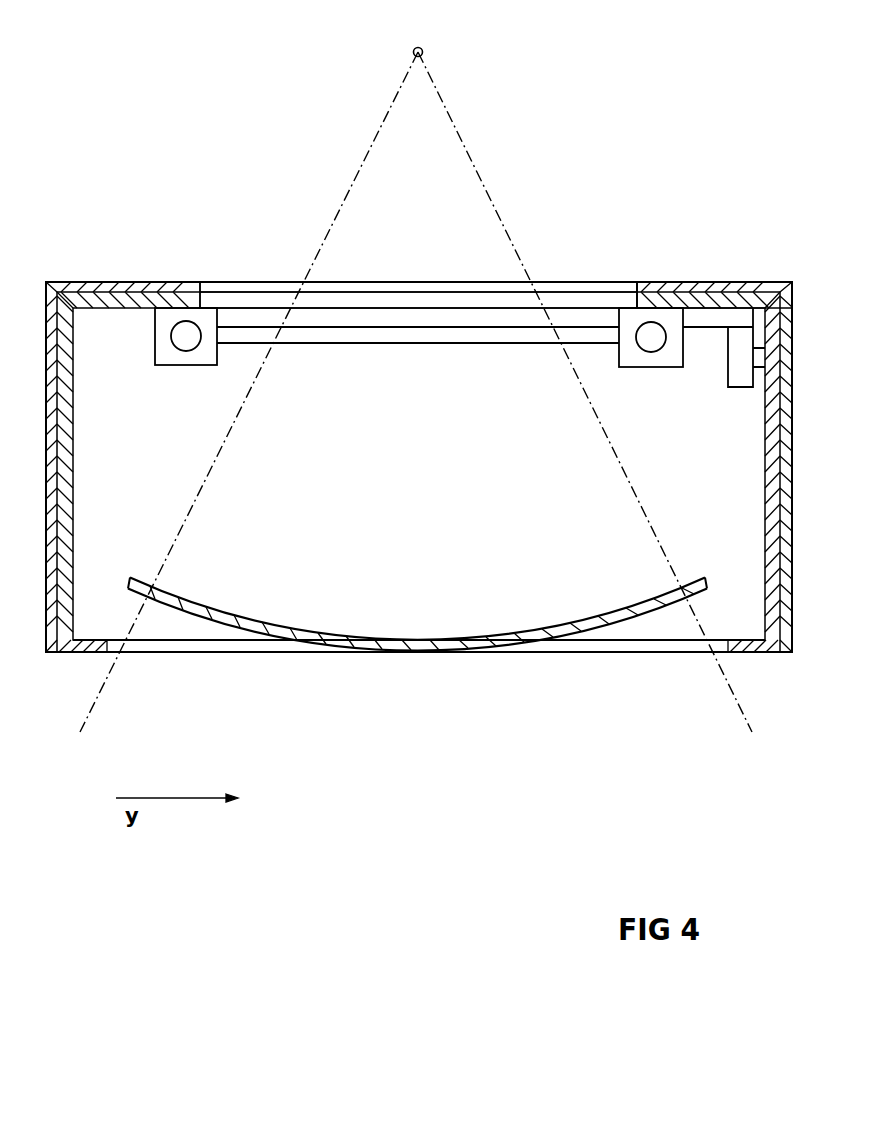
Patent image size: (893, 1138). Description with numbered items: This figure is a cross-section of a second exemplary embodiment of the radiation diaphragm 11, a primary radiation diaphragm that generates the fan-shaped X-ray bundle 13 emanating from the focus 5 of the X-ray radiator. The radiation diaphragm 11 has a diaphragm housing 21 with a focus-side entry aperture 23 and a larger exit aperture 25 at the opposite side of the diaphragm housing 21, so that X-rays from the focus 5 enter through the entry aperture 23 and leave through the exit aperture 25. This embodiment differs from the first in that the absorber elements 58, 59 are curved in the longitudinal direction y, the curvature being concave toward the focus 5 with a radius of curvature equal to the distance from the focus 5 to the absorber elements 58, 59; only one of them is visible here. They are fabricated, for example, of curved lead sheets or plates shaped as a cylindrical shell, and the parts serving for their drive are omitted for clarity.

The focus 5 is at (423, 47).
The radiation diaphragm 11 is at (129, 232).
The X-ray bundle 13 is at (348, 188).
The diaphragm housing 21 is at (681, 283).
The entry aperture 23 is at (411, 283).
The exit aperture 25 is at (197, 653).
The absorber element 58 is at (629, 612).
The absorber element 59 is at (417, 620).